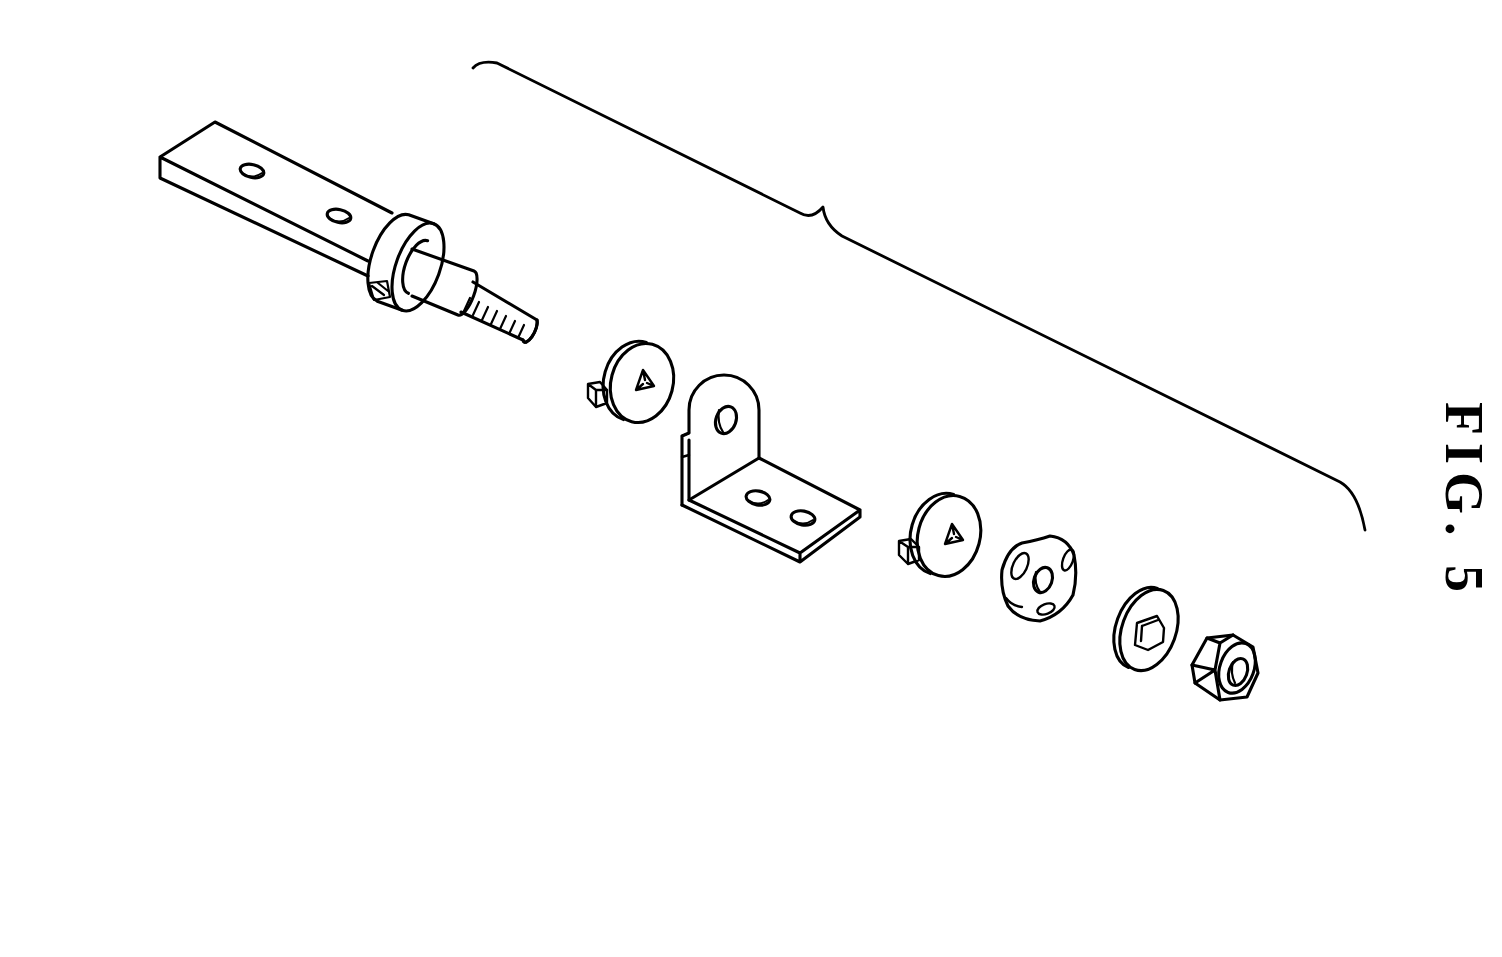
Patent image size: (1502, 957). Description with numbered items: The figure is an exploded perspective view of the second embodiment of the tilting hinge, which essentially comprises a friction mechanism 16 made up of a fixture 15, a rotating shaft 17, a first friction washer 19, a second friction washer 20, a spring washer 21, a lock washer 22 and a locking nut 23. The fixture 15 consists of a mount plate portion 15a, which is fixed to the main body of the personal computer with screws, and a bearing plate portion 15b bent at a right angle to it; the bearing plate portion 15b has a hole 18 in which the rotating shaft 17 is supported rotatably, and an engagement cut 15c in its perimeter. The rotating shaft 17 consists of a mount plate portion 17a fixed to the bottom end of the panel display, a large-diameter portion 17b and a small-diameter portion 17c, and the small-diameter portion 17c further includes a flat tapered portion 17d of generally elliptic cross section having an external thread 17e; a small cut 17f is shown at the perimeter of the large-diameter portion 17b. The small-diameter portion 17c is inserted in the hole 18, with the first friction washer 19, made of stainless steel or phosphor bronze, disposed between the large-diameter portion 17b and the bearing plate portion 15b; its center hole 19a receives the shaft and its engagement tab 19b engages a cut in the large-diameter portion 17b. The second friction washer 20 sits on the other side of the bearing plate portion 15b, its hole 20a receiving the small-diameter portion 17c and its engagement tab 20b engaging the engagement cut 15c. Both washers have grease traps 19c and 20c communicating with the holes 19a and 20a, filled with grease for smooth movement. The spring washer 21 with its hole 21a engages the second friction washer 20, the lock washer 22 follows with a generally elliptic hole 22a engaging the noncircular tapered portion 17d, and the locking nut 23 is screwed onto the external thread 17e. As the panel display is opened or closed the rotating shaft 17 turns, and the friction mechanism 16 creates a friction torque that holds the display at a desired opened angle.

The fixture 15 is at (721, 456).
The mount plate portion 15a is at (753, 517).
The bearing plate portion 15b is at (757, 400).
The engagement cut 15c is at (683, 452).
The friction mechanism 16 is at (847, 191).
The rotating shaft 17 is at (375, 242).
The mount plate portion 17a is at (288, 175).
The large-diameter portion 17b is at (435, 218).
The small-diameter portion 17c is at (457, 263).
The tapered portion 17d is at (488, 288).
The external thread 17e is at (517, 342).
The projection 17f is at (373, 293).
The hole 18 is at (738, 423).
The first friction washer 19 is at (621, 362).
The hole 19a is at (634, 413).
The engagement tab 19b is at (590, 405).
The grease traps 19c is at (650, 375).
The second friction washer 20 is at (940, 529).
The hole 20a is at (952, 575).
The engagement tab 20b is at (902, 548).
The grease traps 20c is at (950, 537).
The spring washer 21 is at (1054, 571).
The hole 21a is at (1020, 613).
The lock washer 22 is at (1148, 633).
The hole 22a is at (1148, 652).
The locking nut 23 is at (1247, 647).